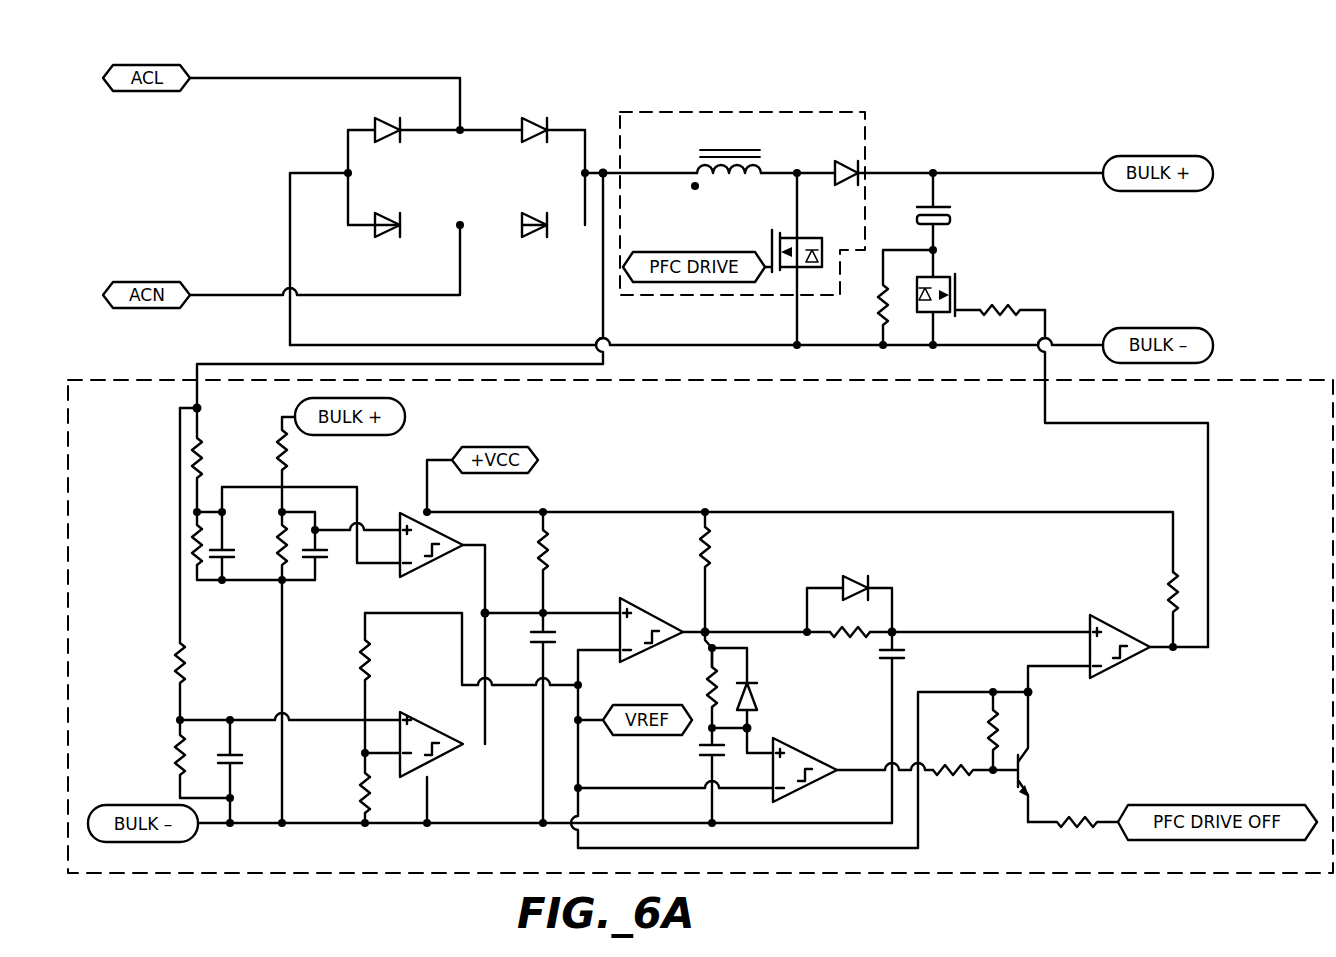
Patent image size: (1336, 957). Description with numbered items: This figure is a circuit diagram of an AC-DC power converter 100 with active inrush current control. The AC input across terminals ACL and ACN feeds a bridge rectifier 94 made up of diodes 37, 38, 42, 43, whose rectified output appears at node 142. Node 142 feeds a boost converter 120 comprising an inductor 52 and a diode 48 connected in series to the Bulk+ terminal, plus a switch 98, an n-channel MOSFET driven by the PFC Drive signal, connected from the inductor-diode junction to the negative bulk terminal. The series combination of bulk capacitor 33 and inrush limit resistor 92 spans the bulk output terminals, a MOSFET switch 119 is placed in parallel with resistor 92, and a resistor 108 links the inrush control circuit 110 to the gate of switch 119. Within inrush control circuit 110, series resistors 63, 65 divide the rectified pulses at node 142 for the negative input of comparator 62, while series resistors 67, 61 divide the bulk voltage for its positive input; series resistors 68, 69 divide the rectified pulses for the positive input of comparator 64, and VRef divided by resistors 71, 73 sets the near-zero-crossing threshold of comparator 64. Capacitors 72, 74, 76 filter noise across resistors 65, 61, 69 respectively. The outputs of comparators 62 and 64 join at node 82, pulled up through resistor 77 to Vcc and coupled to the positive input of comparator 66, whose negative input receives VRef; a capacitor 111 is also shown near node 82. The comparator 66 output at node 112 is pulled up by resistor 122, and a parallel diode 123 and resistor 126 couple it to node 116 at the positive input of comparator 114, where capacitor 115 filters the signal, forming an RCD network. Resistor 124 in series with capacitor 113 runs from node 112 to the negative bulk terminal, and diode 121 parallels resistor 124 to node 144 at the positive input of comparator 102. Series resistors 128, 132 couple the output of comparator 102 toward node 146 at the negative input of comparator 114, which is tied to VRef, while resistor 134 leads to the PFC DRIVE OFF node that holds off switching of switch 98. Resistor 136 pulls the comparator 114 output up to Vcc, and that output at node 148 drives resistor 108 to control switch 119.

The bulk capacitor 33 is at (953, 225).
The diode 37 is at (530, 118).
The diode 38 is at (526, 214).
The diode 42 is at (380, 120).
The diode 43 is at (387, 215).
The diode 48 is at (838, 162).
The inductor 52 is at (735, 186).
The resistor 61 is at (272, 568).
The comparator 62 is at (410, 512).
The resistor 63 is at (205, 450).
The comparator 64 is at (418, 714).
The resistor 65 is at (190, 546).
The comparator 66 is at (637, 598).
The resistor 67 is at (292, 455).
The resistor 68 is at (172, 662).
The resistor 69 is at (172, 754).
The resistor 71 is at (357, 656).
The capacitor 72 is at (230, 530).
The resistor 73 is at (357, 792).
The capacitor 74 is at (328, 560).
The capacitor 76 is at (238, 766).
The resistor 77 is at (555, 553).
The node 82 is at (490, 610).
The inrush limit resistor 92 is at (873, 300).
The bridge rectifier 94 is at (483, 90).
The switch 98 is at (805, 236).
The AC-DC power converter 100 is at (783, 80).
The comparator 102 is at (803, 752).
The resistor 108 is at (1012, 306).
The inrush control circuit 110 is at (1072, 876).
The capacitor 111 is at (536, 650).
The node 112 is at (706, 628).
The capacitor 113 is at (700, 758).
The comparator 114 is at (1108, 633).
The capacitor 115 is at (898, 656).
The node 116 is at (897, 630).
The switch 119 is at (960, 282).
The boost converter 120 is at (868, 142).
The diode 121 is at (756, 698).
The resistor 122 is at (715, 550).
The diode 123 is at (853, 576).
The resistor 124 is at (702, 685).
The resistor 126 is at (842, 640).
The resistor 128 is at (968, 786).
The resistor 132 is at (985, 730).
The resistor 134 is at (1082, 812).
The resistor 136 is at (1165, 592).
The node 142 is at (607, 170).
The node 144 is at (752, 727).
The node 146 is at (1031, 697).
The node 148 is at (1030, 772).